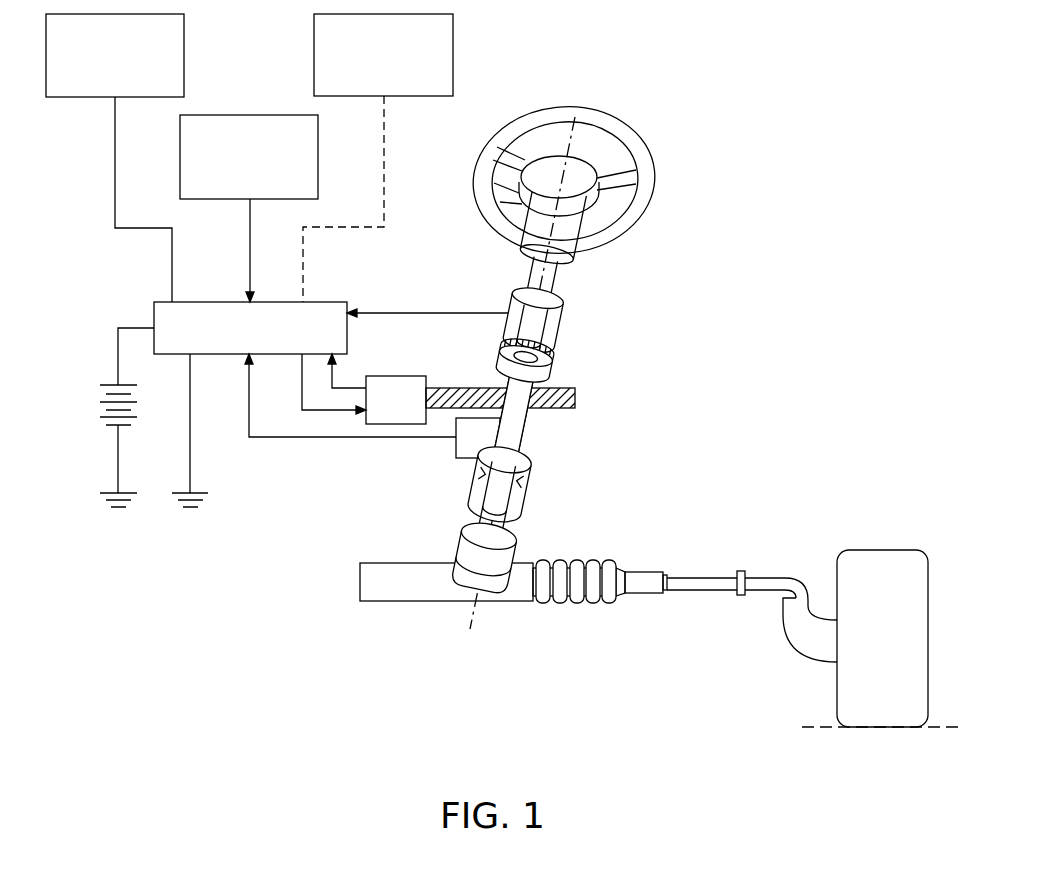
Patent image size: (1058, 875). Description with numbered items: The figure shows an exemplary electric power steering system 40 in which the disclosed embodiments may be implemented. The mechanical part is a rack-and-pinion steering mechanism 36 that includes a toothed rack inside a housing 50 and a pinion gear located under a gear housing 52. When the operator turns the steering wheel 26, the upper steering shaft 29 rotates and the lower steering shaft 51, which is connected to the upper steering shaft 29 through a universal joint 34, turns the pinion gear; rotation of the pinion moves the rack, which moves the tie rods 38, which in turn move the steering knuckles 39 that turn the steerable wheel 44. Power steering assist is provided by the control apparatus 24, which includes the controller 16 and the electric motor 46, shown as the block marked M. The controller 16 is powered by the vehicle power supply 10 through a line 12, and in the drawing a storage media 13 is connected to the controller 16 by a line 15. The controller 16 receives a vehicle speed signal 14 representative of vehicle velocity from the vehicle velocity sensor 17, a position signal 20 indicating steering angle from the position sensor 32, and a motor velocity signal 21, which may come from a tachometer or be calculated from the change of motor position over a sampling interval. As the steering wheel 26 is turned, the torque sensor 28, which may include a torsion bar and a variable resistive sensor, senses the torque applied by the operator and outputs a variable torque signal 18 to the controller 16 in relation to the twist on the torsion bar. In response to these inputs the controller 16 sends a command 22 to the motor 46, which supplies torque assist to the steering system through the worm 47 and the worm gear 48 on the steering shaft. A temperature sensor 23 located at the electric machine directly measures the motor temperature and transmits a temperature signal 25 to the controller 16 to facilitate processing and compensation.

The vehicle power supply 10 is at (108, 409).
The line 12 is at (132, 327).
The storage media 13 is at (58, 100).
The vehicle speed signal 14 is at (248, 212).
The storage media connection line 15 is at (113, 145).
The controller 16 is at (222, 300).
The vehicle velocity sensor 17 is at (250, 114).
The variable torque signal 18 is at (435, 312).
The position signal 20 is at (350, 447).
The motor velocity signal 21 is at (355, 385).
The command 22 is at (315, 425).
The temperature sensor 23 is at (458, 52).
The control apparatus 24 is at (728, 303).
The temperature signal 25 is at (388, 143).
The steering wheel 26 is at (608, 127).
The torque sensor 28 is at (555, 317).
The upper steering shaft 29 is at (530, 289).
The position sensor 32 is at (455, 452).
The universal joint 34 is at (525, 481).
The steering mechanism 36 is at (604, 549).
The tie rods 38 is at (697, 583).
The steering knuckles 39 is at (805, 626).
The electric power steering system 40 is at (800, 390).
The steerable wheel 44 is at (868, 562).
The motor 46 is at (405, 376).
The worm 47 is at (575, 403).
The worm gear 48 is at (540, 365).
The housing 50 is at (394, 600).
The lower steering shaft 51 is at (503, 526).
The gear housing 52 is at (462, 546).